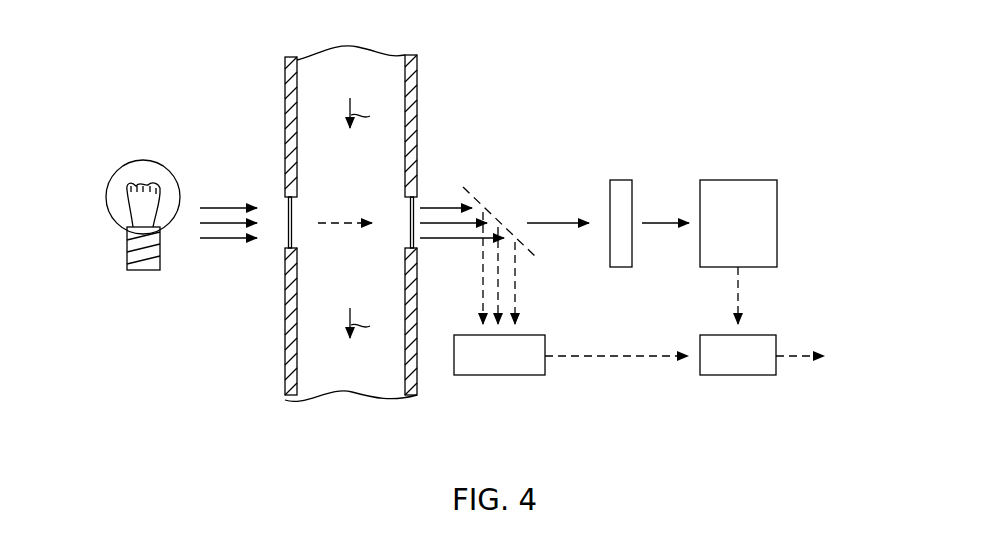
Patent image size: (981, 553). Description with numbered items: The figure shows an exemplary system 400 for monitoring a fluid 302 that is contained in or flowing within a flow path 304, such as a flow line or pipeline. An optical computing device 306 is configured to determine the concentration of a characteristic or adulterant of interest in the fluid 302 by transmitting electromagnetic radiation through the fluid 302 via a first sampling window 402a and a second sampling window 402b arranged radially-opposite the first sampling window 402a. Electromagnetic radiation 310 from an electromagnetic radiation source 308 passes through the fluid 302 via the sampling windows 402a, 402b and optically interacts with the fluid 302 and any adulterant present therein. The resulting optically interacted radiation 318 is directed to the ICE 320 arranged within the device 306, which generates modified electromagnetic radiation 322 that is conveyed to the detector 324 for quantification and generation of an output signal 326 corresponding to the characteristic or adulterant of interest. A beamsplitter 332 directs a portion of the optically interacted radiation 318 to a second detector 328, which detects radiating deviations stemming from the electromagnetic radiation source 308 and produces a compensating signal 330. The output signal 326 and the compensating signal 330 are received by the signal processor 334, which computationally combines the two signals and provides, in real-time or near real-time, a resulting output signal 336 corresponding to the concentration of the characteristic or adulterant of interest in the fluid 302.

The system for monitoring a fluid 400 is at (233, 72).
The flow path 304 is at (418, 75).
The fluid 302 is at (371, 191).
The electromagnetic radiation source 308 is at (124, 174).
The electromagnetic radiation 310 is at (228, 205).
The first sampling window 402a is at (287, 240).
The second sampling window 402b is at (415, 247).
The optically interacted radiation 318 is at (442, 206).
The beamsplitter 332 is at (468, 188).
The optical computing device 306 is at (573, 128).
The ICE 320 is at (622, 180).
The modified electromagnetic radiation 322 is at (658, 221).
The detector 324 is at (758, 236).
The output signal 326 is at (739, 292).
The second detector 328 is at (519, 368).
The compensating signal 330 is at (575, 356).
The signal processor 334 is at (757, 368).
The resulting output signal 336 is at (805, 352).